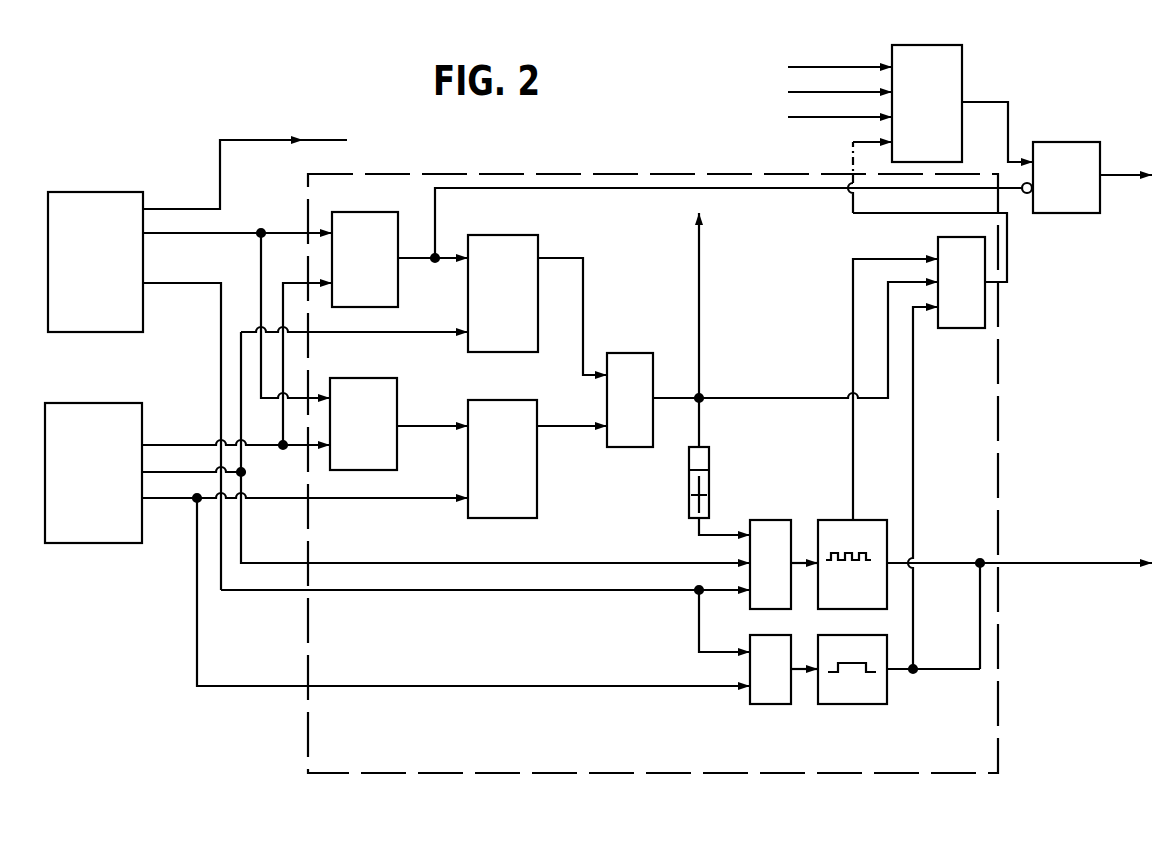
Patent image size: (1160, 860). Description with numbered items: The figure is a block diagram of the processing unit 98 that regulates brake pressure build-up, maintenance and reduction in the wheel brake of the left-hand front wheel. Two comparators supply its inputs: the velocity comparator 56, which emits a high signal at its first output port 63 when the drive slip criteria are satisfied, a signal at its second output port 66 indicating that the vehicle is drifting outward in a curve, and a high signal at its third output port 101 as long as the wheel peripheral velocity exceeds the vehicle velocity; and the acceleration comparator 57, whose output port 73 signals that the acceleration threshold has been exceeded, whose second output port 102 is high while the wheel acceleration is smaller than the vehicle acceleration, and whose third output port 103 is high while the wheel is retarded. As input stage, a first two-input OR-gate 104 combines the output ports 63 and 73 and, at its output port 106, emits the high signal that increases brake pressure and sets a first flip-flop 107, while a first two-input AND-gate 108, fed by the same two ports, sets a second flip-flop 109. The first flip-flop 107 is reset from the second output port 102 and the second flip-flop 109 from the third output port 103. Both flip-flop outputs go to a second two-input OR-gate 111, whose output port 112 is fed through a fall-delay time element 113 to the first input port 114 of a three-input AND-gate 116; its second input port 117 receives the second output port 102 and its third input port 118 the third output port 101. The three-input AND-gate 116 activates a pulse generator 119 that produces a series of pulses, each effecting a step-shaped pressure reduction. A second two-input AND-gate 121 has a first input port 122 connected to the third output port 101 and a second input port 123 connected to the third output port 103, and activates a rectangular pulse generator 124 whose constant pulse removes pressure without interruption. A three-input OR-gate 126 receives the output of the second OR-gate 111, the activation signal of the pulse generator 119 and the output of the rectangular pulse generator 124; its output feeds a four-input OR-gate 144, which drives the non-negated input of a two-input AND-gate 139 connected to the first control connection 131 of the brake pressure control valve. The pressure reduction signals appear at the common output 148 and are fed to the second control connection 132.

The velocity comparator 56 is at (97, 203).
The acceleration comparator 57 is at (93, 417).
The first output port 63 is at (170, 235).
The second output port 66 is at (258, 143).
The output port 73 is at (160, 444).
The processing unit 98 is at (604, 175).
The third output port 101 is at (168, 285).
The second output port 102 is at (158, 458).
The third output port 103 is at (155, 486).
The first two-input OR-gate 104 is at (369, 223).
The output port 106 is at (434, 263).
The first flip-flop 107 is at (500, 244).
The first two-input AND-gate 108 is at (365, 382).
The second flip-flop 109 is at (497, 410).
The second two-input OR-gate 111 is at (630, 360).
The output port 112 is at (703, 395).
The fall-delay time element 113 is at (703, 456).
The first input port 114 is at (741, 533).
The three-input AND-gate 116 is at (768, 527).
The second input port 117 is at (745, 561).
The third input port 118 is at (745, 589).
The pulse generator 119 is at (865, 527).
The second two-input AND-gate 121 is at (770, 702).
The first input port 122 is at (744, 650).
The second input port 123 is at (744, 685).
The rectangular pulse generator 124 is at (851, 705).
The three-input OR-gate 126 is at (965, 325).
The first control connection 131 is at (1115, 175).
The second control connection 132 is at (1086, 563).
The two-input AND-gate 139 is at (1073, 204).
The four-input OR-gate 144 is at (922, 56).
The common output 148 is at (985, 561).